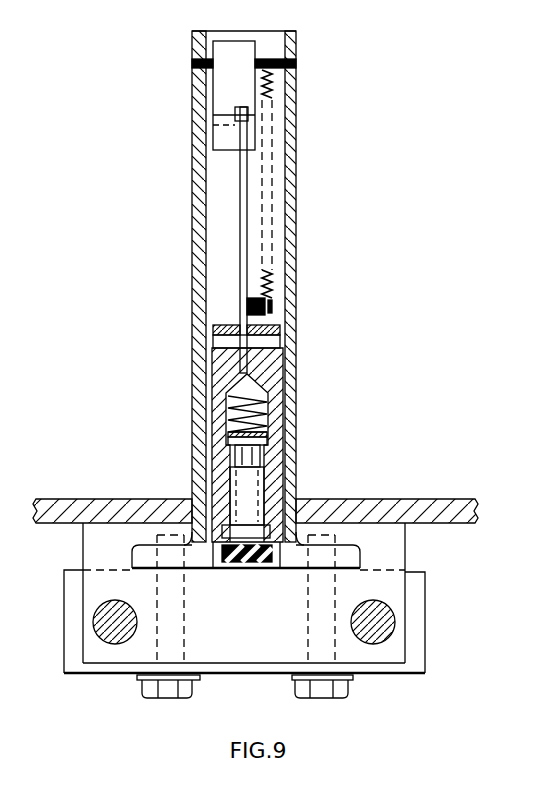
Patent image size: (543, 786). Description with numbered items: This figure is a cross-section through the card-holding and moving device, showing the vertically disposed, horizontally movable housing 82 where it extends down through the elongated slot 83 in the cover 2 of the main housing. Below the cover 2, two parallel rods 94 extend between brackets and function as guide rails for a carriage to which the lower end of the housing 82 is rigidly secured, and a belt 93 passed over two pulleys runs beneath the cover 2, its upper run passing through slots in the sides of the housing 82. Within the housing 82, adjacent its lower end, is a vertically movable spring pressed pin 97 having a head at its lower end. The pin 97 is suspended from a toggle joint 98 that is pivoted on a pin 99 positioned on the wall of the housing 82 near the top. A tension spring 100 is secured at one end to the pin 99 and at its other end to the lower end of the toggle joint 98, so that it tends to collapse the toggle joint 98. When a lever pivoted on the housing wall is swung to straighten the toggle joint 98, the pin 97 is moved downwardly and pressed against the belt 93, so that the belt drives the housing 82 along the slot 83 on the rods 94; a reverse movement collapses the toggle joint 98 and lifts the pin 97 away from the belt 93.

The cover 2 is at (408, 500).
The housing 82 is at (298, 138).
The elongated slot 83 is at (188, 497).
The belt 93 is at (246, 565).
The parallel rods 94 is at (96, 625).
The spring pressed pin 97 is at (267, 492).
The toggle joint 98 is at (237, 233).
The pin 99 is at (285, 58).
The tension spring 100 is at (270, 286).